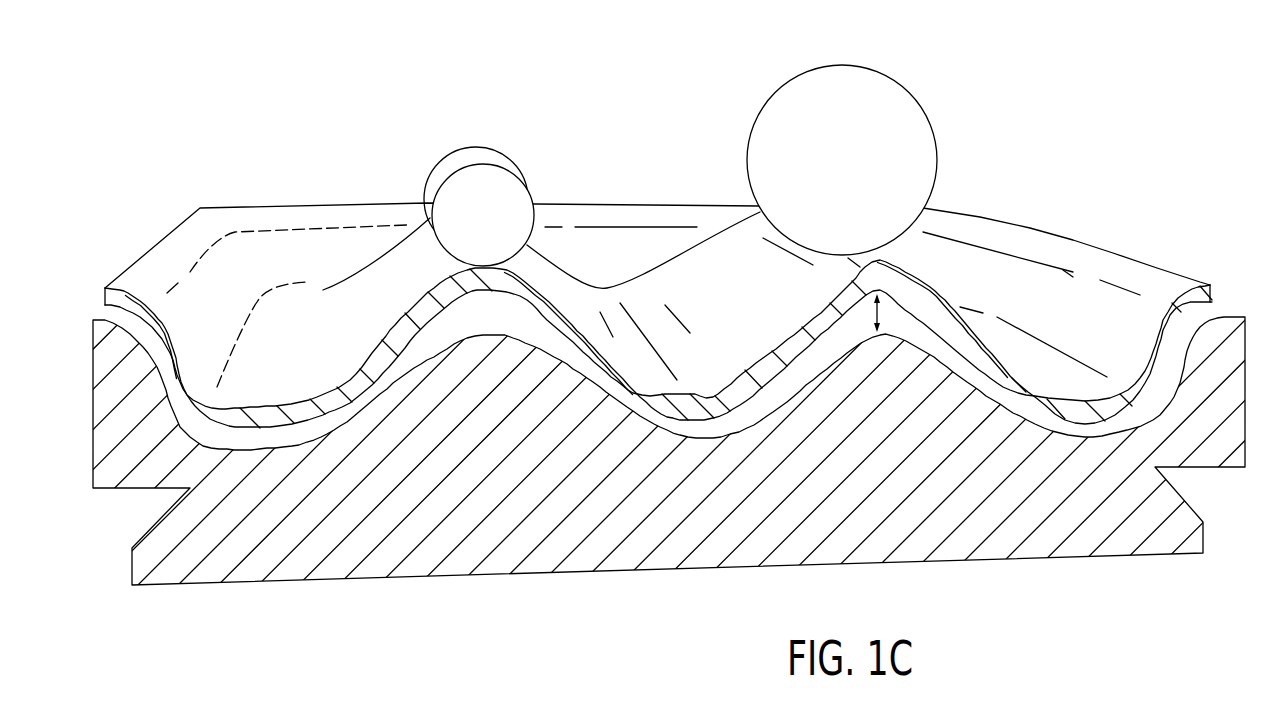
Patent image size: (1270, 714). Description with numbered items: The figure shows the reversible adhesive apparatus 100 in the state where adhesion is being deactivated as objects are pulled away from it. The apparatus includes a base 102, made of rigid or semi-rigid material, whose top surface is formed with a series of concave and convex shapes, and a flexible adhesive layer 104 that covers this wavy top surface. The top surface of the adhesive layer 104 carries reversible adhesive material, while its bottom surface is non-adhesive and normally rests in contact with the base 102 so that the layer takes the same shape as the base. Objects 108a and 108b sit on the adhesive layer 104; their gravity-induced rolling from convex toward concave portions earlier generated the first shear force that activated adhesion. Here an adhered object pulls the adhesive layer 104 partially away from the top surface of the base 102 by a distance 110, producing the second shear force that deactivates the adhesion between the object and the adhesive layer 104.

The reversible adhesive apparatus 100 is at (635, 357).
The base 102 is at (463, 560).
The adhesive layer 104 is at (595, 220).
The object 108a is at (455, 158).
The object 108b is at (803, 97).
The distance 110 is at (880, 294).